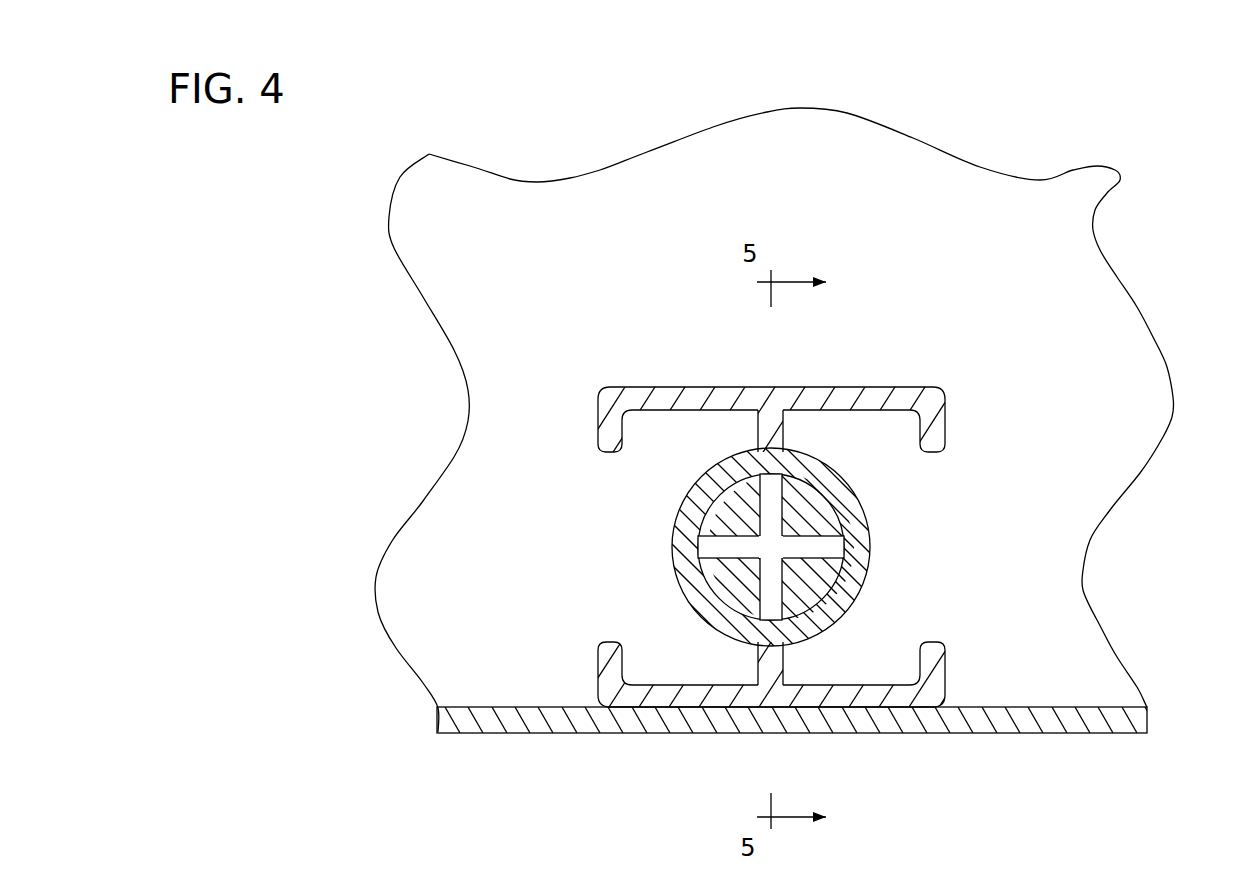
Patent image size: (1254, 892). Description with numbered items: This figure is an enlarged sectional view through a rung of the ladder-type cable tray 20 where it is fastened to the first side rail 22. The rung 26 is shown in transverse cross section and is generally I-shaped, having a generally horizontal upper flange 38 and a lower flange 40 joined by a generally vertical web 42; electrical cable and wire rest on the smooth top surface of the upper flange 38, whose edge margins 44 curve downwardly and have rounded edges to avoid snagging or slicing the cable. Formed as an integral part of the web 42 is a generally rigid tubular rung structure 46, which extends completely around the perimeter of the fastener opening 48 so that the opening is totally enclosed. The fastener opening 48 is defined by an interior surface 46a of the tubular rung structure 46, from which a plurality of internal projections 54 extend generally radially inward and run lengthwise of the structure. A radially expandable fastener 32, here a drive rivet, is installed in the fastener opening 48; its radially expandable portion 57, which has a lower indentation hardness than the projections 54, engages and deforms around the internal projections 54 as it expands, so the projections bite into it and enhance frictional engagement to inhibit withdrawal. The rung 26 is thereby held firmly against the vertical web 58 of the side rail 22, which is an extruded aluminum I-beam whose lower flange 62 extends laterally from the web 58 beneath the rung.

The cable tray 20 is at (1112, 160).
The first side rail 22 is at (1012, 740).
The rung 26 is at (795, 558).
The radially expandable fastener 32 is at (700, 597).
The upper flange 38 is at (838, 387).
The lower flange 40 is at (853, 700).
The web 42 is at (787, 427).
The edge margins 44 is at (598, 430).
The tubular rung structure 46 is at (779, 561).
The interior surface 46a is at (878, 538).
The fastener opening 48 is at (757, 650).
The internal projections 54 is at (718, 512).
The radially expandable portion 57 is at (740, 503).
The vertical web 58 is at (1045, 275).
The lower flange 62 is at (960, 723).